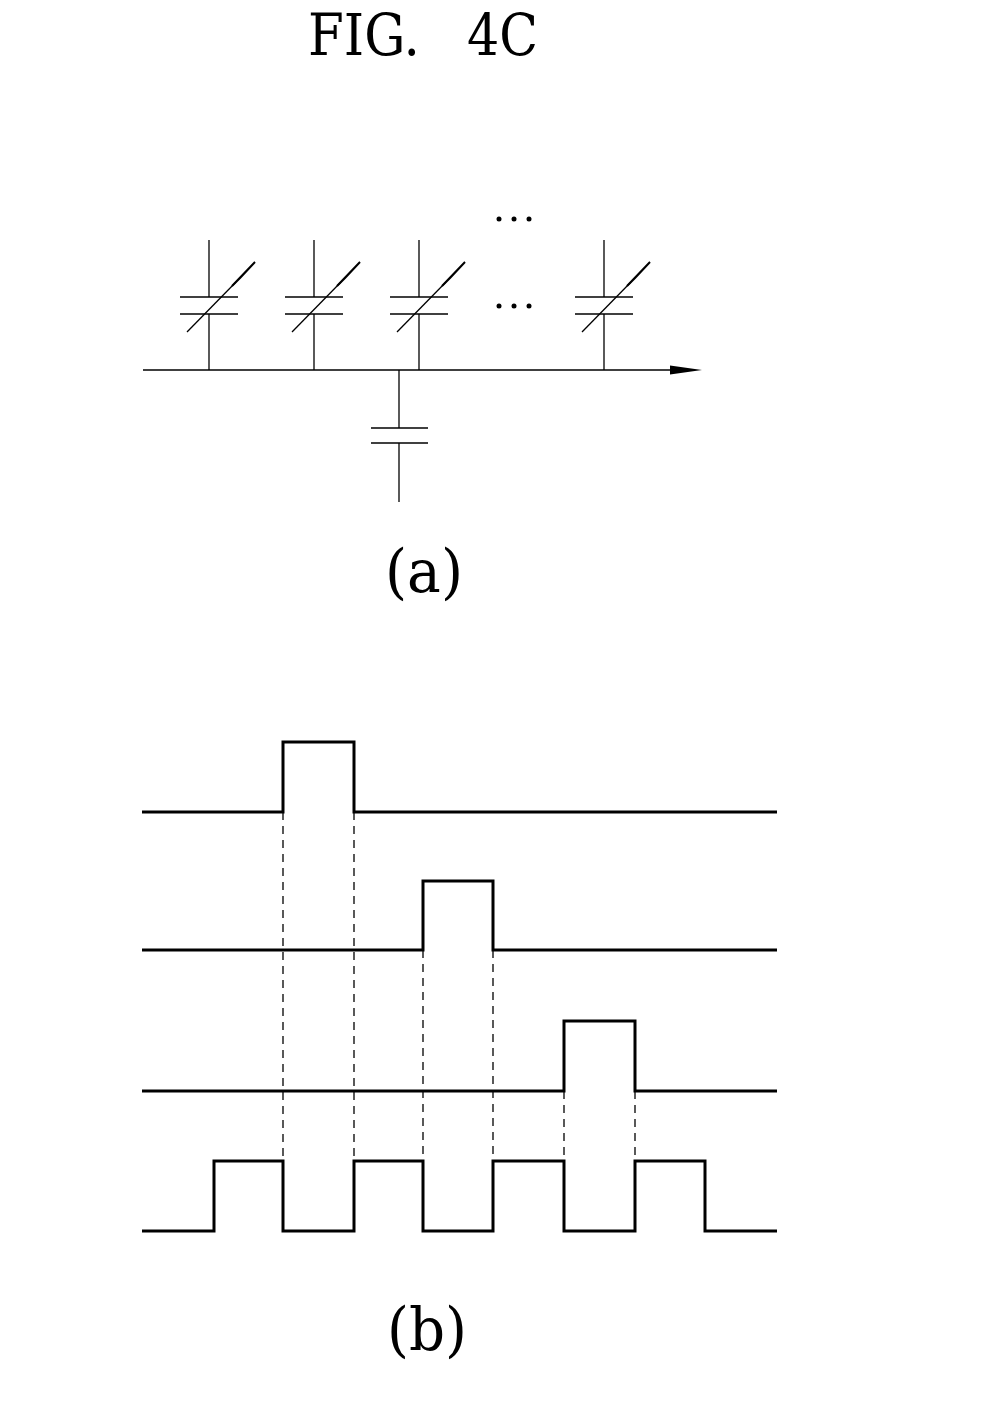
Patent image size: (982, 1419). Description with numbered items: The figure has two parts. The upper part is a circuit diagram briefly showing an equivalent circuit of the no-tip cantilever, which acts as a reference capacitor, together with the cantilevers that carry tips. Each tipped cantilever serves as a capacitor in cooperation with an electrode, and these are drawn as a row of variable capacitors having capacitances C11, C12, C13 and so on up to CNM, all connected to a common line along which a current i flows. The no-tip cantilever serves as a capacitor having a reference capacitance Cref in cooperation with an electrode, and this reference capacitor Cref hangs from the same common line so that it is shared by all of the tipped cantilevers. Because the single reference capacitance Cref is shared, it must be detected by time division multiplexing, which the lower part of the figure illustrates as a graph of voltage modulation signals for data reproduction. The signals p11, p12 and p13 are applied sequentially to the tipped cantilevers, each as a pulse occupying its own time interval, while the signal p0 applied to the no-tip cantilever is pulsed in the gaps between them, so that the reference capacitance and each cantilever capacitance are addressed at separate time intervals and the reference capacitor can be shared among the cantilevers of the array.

The capacitance of cantilever p11 C11 is at (217, 285).
The capacitance of cantilever p12 C12 is at (322, 285).
The capacitance of cantilever p13 C13 is at (427, 285).
The capacitance of cantilever pNM CNM is at (612, 285).
The reference capacitance Cref is at (372, 436).
The current i is at (435, 368).
The cantilever p11 voltage modulation signal p11 is at (440, 783).
The cantilever p12 voltage modulation signal p12 is at (440, 922).
The cantilever p13 voltage modulation signal p13 is at (440, 1062).
The no-tip cantilever voltage modulation signal p0 is at (440, 1202).